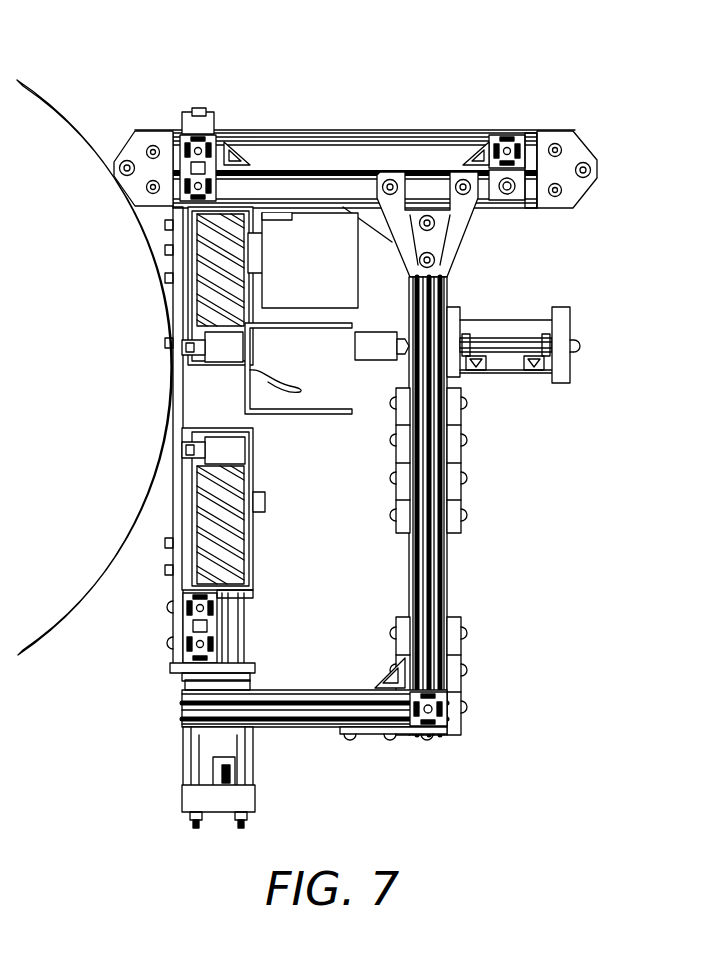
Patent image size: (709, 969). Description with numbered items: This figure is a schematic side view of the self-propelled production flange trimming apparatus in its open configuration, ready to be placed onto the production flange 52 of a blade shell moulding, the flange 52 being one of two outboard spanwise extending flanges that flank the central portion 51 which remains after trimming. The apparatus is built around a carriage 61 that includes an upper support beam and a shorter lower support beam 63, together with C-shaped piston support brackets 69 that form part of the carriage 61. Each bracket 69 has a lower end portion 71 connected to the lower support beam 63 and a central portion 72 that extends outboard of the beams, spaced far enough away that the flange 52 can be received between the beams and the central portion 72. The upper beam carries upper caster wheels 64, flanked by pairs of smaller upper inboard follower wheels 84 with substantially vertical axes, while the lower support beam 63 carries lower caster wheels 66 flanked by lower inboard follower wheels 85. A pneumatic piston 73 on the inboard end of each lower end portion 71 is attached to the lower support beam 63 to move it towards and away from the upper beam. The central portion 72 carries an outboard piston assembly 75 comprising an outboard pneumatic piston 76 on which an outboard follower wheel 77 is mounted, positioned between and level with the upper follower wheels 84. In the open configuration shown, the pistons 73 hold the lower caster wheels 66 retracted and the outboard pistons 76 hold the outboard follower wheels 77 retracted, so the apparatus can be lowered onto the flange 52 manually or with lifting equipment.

The central portion 51 is at (52, 100).
The production flange 52 is at (340, 414).
The carriage 61 is at (374, 130).
The lower support beam 63 is at (185, 625).
The upper caster wheel 64 is at (206, 262).
The lower caster wheel 66 is at (202, 487).
The C-shaped piston support bracket 69 is at (458, 461).
The lower end portion 71 is at (318, 690).
The central portion 72 is at (448, 577).
The pneumatic piston 73 is at (255, 794).
The outboard piston assembly 75 is at (571, 320).
The outboard pneumatic piston 76 is at (509, 322).
The outboard follower wheel 77 is at (377, 360).
The upper inboard follower wheel 84 is at (215, 340).
The lower inboard follower wheel 85 is at (236, 448).